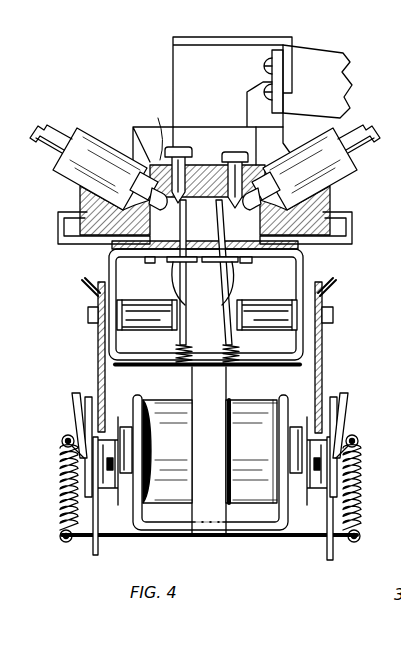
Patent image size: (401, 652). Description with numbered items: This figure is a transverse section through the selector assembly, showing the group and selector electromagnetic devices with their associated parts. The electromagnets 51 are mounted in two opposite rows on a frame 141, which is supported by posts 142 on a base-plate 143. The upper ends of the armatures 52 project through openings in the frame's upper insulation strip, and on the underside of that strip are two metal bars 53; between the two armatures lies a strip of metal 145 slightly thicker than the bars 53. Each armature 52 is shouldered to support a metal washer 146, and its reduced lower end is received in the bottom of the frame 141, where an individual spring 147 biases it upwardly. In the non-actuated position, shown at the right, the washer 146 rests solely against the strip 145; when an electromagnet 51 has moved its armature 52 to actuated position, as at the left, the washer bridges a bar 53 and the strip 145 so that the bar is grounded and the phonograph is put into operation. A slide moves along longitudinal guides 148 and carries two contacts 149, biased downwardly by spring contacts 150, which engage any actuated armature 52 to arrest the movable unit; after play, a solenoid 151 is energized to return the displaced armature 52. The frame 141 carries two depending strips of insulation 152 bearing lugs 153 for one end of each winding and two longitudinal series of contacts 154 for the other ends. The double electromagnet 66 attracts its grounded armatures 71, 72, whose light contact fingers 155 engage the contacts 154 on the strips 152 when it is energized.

The electromagnet 51 is at (173, 306).
The armature 52 is at (180, 228).
The metal bar 53 is at (145, 264).
The double electromagnet 66 is at (182, 424).
The armature 71 is at (312, 486).
The armature 72 is at (108, 488).
The frame 141 is at (305, 263).
The post 142 is at (218, 421).
The base-plate 143 is at (303, 246).
The strip of metal 145 is at (205, 262).
The metal washer 146 is at (222, 292).
The spring 147 is at (160, 112).
The longitudinal guide 148 is at (57, 214).
The contact 149 is at (134, 140).
The spring contact 150 is at (186, 141).
The solenoid 151 is at (101, 166).
The strip of insulation 152 is at (98, 342).
The lug 153 is at (80, 286).
The contact 154 is at (86, 396).
The contact finger 155 is at (74, 396).